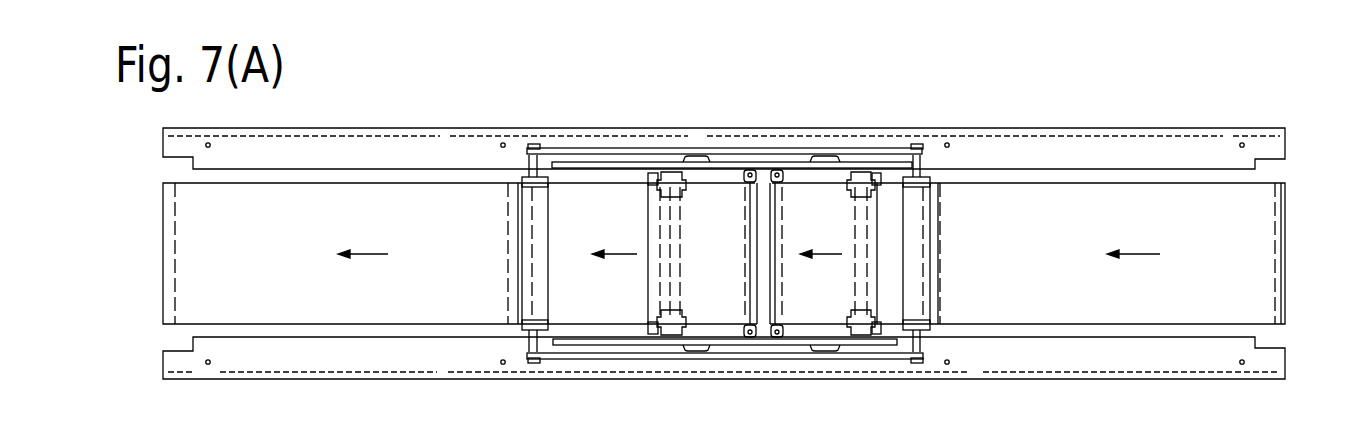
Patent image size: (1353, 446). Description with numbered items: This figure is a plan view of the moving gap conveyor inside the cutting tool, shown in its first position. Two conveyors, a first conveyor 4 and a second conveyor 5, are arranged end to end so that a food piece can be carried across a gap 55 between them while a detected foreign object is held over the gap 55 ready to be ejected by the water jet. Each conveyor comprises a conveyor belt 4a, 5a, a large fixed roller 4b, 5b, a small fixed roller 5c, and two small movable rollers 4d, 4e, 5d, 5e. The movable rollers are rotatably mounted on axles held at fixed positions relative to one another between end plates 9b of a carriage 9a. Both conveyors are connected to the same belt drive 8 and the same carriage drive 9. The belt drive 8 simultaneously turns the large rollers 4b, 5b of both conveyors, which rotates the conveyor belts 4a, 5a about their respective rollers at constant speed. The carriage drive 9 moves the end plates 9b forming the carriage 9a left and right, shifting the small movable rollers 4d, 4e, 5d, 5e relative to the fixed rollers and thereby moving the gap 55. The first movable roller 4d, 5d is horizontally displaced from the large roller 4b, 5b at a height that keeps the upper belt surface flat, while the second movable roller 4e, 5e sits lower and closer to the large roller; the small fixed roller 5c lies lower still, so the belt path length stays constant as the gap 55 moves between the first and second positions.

The first conveyor 4 is at (958, 211).
The conveyor belt 4a is at (888, 313).
The large fixed roller 4b is at (917, 214).
The first small movable roller 4d is at (777, 170).
The second small movable roller 4e is at (865, 172).
The second conveyor 5 is at (488, 252).
The conveyor belt 5a is at (608, 308).
The large fixed roller 5b is at (550, 228).
The small fixed roller 5c is at (680, 190).
The first small movable roller 5d is at (748, 170).
The second small movable roller 5e is at (685, 205).
The belt drive 8 is at (574, 150).
The carriage drive 9 is at (732, 236).
The carriage 9a is at (718, 170).
The end plate 9b is at (805, 340).
The gap 55 is at (767, 333).